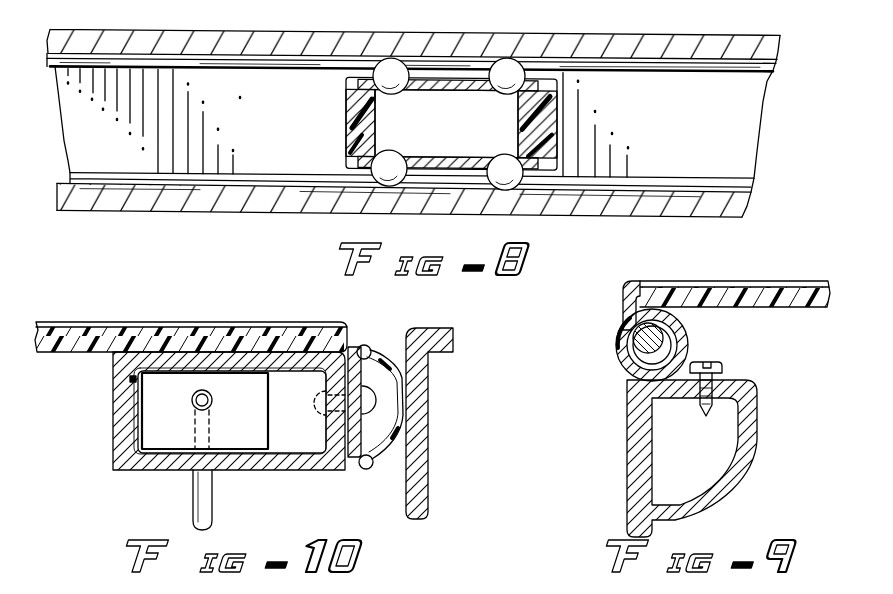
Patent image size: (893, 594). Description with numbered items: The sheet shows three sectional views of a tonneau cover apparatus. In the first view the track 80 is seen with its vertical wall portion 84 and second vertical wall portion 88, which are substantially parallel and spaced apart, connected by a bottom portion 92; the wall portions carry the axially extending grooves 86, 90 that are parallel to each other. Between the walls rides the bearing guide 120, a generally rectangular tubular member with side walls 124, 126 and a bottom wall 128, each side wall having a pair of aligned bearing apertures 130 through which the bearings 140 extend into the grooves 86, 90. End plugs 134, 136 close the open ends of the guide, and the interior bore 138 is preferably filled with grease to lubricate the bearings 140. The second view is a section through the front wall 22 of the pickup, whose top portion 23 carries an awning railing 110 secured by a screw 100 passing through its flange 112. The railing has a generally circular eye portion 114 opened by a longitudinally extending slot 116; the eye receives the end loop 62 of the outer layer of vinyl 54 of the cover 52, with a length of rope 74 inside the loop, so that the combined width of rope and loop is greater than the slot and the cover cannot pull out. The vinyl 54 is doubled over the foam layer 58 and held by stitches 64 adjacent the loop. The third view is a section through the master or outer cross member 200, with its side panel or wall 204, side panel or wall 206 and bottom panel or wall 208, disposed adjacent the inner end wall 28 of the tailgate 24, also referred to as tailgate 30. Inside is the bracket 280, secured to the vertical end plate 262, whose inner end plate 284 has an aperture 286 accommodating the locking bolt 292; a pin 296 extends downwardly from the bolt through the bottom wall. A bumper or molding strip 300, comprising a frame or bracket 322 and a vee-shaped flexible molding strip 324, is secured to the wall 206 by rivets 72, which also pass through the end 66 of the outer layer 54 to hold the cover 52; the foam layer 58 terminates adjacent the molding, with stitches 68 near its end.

In FIG. 8, the track 80 is at (748, 30).
In FIG. 8, the vertical wall portion 84 is at (780, 54).
In FIG. 8, the axially extending groove 86 is at (765, 70).
In FIG. 8, the bottom portion 92 is at (752, 136).
In FIG. 8, the axially extending groove 90 is at (745, 188).
In FIG. 8, the second vertical wall portion 88 is at (745, 212).
In FIG. 8, the bearing guide 120 is at (439, 97).
In FIG. 8, the side wall 124 is at (406, 87).
In FIG. 8, the side wall 126 is at (468, 157).
In FIG. 8, the bottom wall 128 is at (386, 103).
In FIG. 8, the bearing apertures 130 is at (498, 84).
In FIG. 8, the end plug 134 is at (548, 118).
In FIG. 8, the end plug 136 is at (365, 117).
In FIG. 8, the interior bore 138 is at (514, 138).
In FIG. 8, the bearings 140 is at (503, 54).
In FIG. 9, the tonneau cover 52 is at (776, 282).
In FIG. 10, the tonneau cover 52 is at (123, 319).
In FIG. 9, the outer layer of vinyl 54 is at (806, 285).
In FIG. 10, the outer layer of vinyl 54 is at (181, 323).
In FIG. 9, the foam layer 58 is at (818, 297).
In FIG. 10, the foam layer 58 is at (205, 336).
In FIG. 10, the stitches 68 is at (266, 332).
In FIG. 10, the master or outer cross member 200 is at (205, 437).
In FIG. 10, the side panel or wall 204 is at (124, 390).
In FIG. 10, the side panel or wall 206 is at (326, 430).
In FIG. 10, the bottom panel or wall 208 is at (187, 466).
In FIG. 10, the vertical end plate 262 is at (252, 462).
In FIG. 10, the bracket 280 is at (130, 378).
In FIG. 10, the inner end plate 284 is at (155, 414).
In FIG. 10, the aperture 286 is at (192, 398).
In FIG. 10, the locking bolt 292 is at (212, 398).
In FIG. 10, the pin 296 is at (174, 500).
In FIG. 10, the end 66 is at (322, 406).
In FIG. 10, the rivets 72 is at (372, 416).
In FIG. 10, the bumper or molding strip 300 is at (369, 397).
In FIG. 10, the frame or bracket 322 is at (360, 470).
In FIG. 10, the flexible molding strip 324 is at (383, 358).
In FIG. 10, the tailgate 24 is at (421, 414).
In FIG. 10, the inner end wall 28 is at (416, 488).
In FIG. 10, the tailgate 30 is at (433, 332).
In FIG. 9, the stitches 64 is at (714, 282).
In FIG. 9, the end loop 62 is at (661, 347).
In FIG. 9, the eye portion 114 is at (680, 338).
In FIG. 9, the longitudinally extending slot 116 is at (622, 346).
In FIG. 9, the rope 74 is at (670, 358).
In FIG. 9, the awning railing 110 is at (682, 454).
In FIG. 9, the flange 112 is at (732, 380).
In FIG. 9, the front wall 22 is at (636, 472).
In FIG. 9, the top portion 23 is at (692, 398).
In FIG. 9, the screw 100 is at (718, 364).